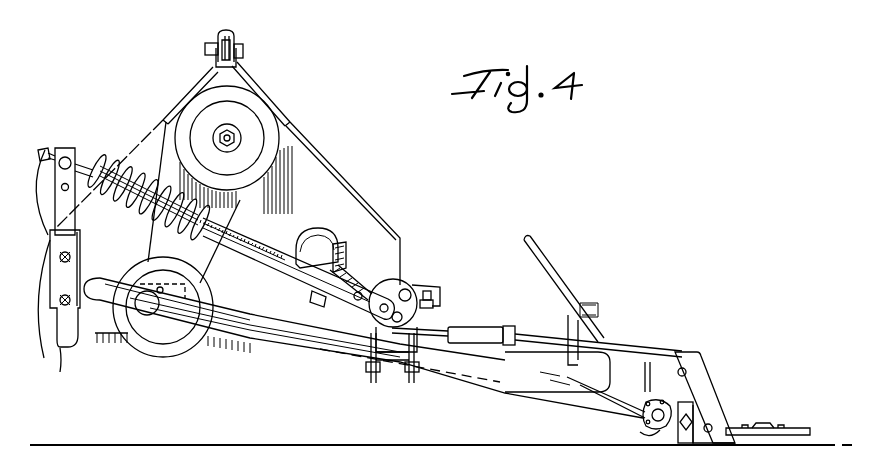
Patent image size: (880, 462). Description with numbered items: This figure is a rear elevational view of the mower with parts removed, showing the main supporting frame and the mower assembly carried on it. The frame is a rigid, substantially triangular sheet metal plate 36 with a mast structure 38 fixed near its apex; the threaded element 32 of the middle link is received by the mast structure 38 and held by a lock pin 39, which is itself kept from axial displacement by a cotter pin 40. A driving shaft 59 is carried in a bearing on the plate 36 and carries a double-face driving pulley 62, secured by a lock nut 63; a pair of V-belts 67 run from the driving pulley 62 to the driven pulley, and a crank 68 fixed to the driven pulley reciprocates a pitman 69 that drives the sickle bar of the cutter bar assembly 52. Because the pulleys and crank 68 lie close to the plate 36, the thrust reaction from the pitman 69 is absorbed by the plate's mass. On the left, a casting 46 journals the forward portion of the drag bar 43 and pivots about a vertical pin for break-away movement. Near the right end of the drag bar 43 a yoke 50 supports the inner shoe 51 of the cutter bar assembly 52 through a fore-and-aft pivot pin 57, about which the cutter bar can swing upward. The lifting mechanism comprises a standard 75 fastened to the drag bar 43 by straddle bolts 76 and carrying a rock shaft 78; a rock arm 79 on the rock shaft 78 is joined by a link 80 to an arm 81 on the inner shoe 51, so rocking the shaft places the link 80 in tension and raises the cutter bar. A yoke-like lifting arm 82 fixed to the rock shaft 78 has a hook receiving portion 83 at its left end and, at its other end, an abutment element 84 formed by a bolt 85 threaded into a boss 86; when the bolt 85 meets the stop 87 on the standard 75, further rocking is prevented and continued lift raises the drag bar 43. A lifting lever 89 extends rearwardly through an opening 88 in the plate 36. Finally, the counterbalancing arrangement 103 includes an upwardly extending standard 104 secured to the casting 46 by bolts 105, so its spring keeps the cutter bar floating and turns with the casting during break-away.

The threaded element 32 is at (240, 50).
The sheet metal plate 36 is at (228, 236).
The mast structure 38 is at (255, 80).
The lock pin 39 is at (206, 47).
The cotter pin 40 is at (222, 40).
The drag bar 43 is at (288, 342).
The casting 46 is at (66, 348).
The yoke 50 is at (592, 394).
The inner shoe 51 is at (640, 432).
The cutter bar assembly 52 is at (777, 416).
The pivot pin 57 is at (640, 418).
The driving shaft 59 is at (222, 138).
The driving pulley 62 is at (233, 150).
The lock nut 63 is at (226, 146).
The V-belts 67 is at (248, 222).
The crank 68 is at (160, 352).
The pitman 69 is at (540, 375).
The standard 75 is at (392, 372).
The straddle bolts 76 is at (416, 378).
The rock shaft 78 is at (412, 284).
The rock arm 79 is at (410, 288).
The link 80 is at (560, 346).
The arm 81 is at (706, 380).
The lifting arm 82 is at (392, 286).
The hook receiving portion 83 is at (320, 297).
The abutment element 84 is at (406, 312).
The bolt 85 is at (434, 304).
The boss 86 is at (432, 294).
The stop 87 is at (438, 322).
The opening 88 is at (320, 234).
The lifting lever 89 is at (344, 258).
The counterbalancing arrangement 103 is at (122, 154).
The standard 104 is at (56, 146).
The bolts 105 is at (48, 355).